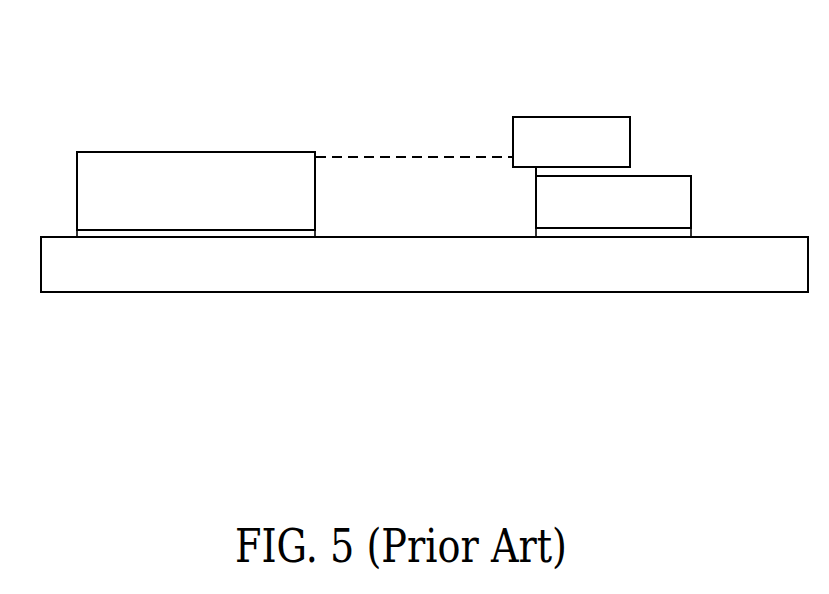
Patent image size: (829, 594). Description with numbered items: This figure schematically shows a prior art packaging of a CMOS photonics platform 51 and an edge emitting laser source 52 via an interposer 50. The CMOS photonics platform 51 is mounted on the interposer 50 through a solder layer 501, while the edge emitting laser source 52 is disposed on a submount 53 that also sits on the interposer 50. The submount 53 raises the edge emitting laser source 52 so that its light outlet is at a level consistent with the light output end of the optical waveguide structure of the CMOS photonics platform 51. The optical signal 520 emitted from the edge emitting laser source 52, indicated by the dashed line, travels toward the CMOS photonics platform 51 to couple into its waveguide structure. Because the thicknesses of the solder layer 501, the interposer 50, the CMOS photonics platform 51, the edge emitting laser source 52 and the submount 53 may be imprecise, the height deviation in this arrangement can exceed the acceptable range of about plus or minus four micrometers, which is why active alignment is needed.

The interposer 50 is at (518, 275).
The CMOS photonics platform 51 is at (186, 175).
The solder layer 501 is at (80, 233).
The optical signal 520 is at (398, 146).
The edge emitting laser source 52 is at (590, 138).
The submount 53 is at (672, 196).